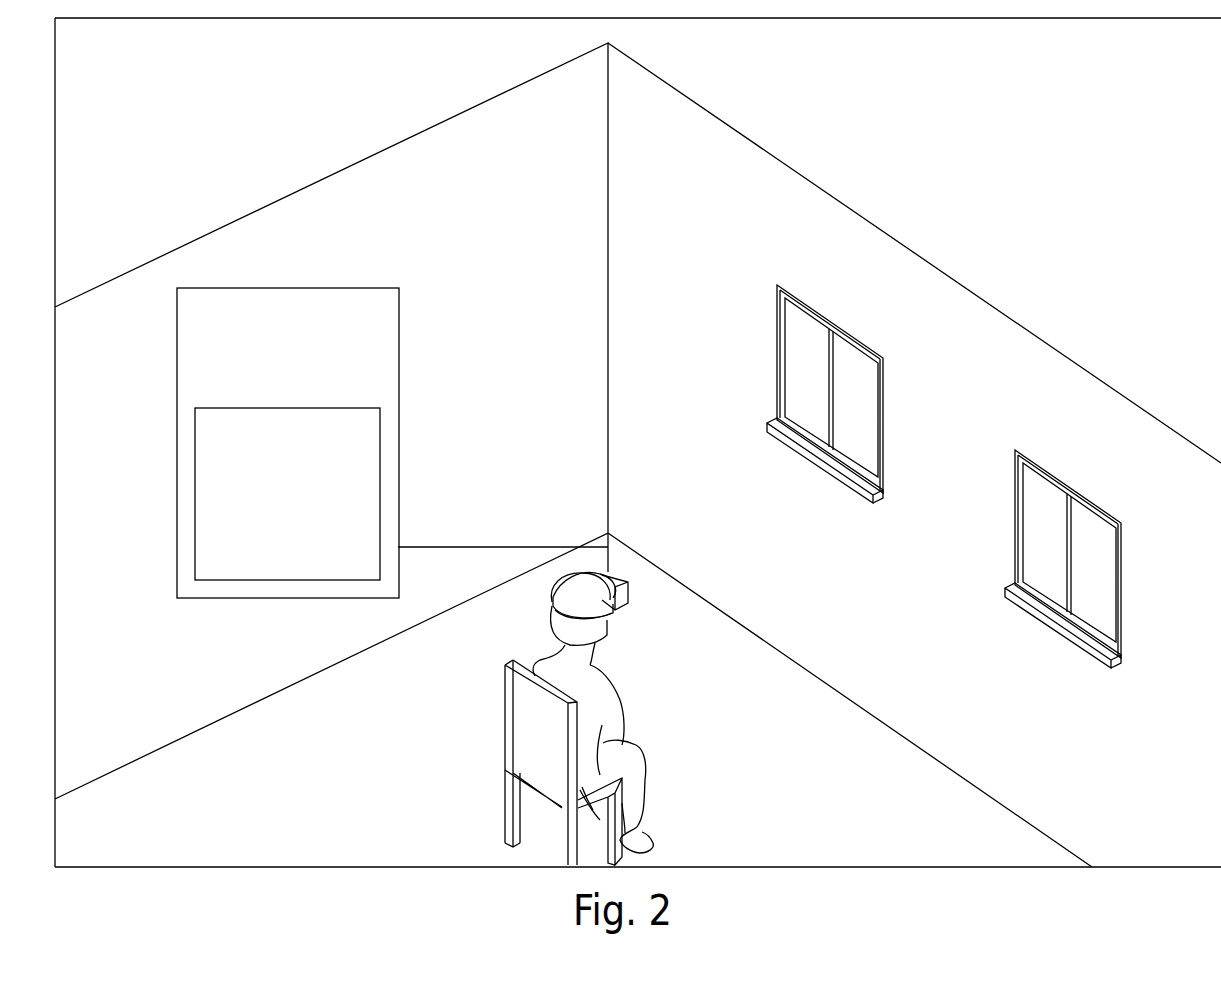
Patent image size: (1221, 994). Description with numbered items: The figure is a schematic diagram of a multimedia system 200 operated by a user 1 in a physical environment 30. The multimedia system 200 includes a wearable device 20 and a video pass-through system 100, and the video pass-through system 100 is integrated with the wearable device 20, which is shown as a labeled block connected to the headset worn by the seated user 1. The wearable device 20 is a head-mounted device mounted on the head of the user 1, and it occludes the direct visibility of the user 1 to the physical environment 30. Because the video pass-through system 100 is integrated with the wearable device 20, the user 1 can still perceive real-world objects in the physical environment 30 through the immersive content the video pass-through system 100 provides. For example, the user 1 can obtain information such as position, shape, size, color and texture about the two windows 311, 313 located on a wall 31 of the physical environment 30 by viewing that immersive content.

The physical environment 30 is at (292, 140).
The wall 31 is at (1147, 412).
The window 311 is at (828, 325).
The window 313 is at (1068, 487).
The multimedia system 200 is at (342, 443).
The wearable device 20 is at (302, 398).
The video pass-through system 100 is at (308, 562).
The user 1 is at (608, 693).